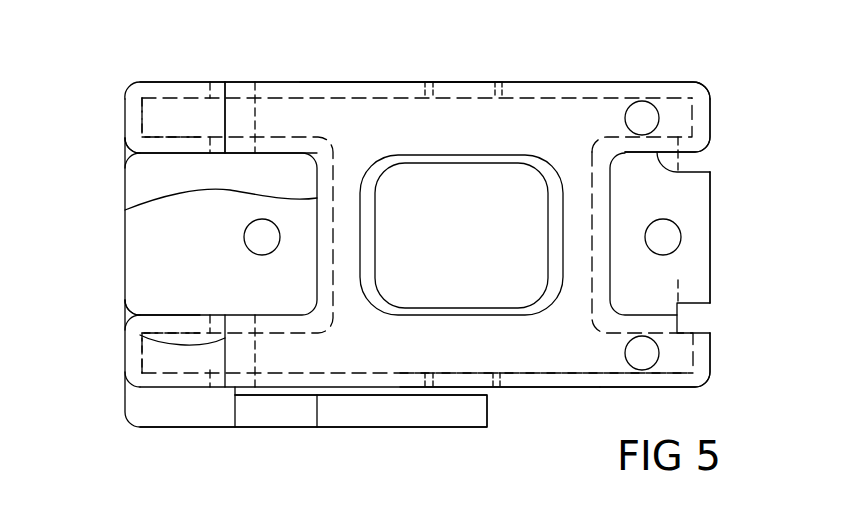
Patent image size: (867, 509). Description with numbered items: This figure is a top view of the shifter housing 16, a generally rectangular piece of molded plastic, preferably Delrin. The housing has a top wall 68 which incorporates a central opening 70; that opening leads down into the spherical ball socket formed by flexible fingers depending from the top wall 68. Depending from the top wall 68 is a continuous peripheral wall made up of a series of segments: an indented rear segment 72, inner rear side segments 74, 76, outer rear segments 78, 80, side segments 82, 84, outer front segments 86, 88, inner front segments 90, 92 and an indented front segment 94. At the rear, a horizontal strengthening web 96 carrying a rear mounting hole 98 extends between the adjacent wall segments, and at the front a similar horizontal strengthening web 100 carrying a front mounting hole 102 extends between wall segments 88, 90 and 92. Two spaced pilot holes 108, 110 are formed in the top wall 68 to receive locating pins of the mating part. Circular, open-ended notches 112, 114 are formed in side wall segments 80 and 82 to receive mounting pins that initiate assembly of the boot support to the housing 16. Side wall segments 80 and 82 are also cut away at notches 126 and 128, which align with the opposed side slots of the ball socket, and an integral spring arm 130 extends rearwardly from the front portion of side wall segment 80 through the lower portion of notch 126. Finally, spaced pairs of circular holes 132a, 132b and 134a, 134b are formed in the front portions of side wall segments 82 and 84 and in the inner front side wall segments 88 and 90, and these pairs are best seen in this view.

The shifter housing 16 is at (711, 73).
The top wall 68 is at (551, 122).
The central opening 70 is at (415, 163).
The indented rear segment 72 is at (610, 186).
The inner rear side segment 74 is at (651, 313).
The inner rear side segment 76 is at (690, 164).
The outer rear segment 78 is at (710, 352).
The outer rear segment 80 is at (713, 108).
The side segment 82 is at (515, 390).
The side segment 84 is at (348, 82).
The outer front segment 86 is at (124, 355).
The outer front segment 88 is at (125, 118).
The inner front segment 90 is at (137, 310).
The inner front segment 92 is at (140, 155).
The indented front segment 94 is at (125, 210).
The horizontal strengthening web 96 is at (693, 212).
The rear mounting hole 98 is at (681, 238).
The horizontal strengthening web 100 is at (147, 238).
The front mounting hole 102 is at (245, 240).
The pilot hole 108 is at (640, 347).
The pilot hole 110 is at (650, 120).
The circular open-ended notch 112 is at (140, 335).
The circular open-ended notch 114 is at (225, 118).
The notch 126 is at (555, 386).
The notch 128 is at (495, 82).
The integral spring arm 130 is at (392, 418).
The circular hole 132a is at (163, 380).
The circular hole 132b is at (168, 313).
The circular hole 134a is at (163, 95).
The circular hole 134b is at (165, 138).